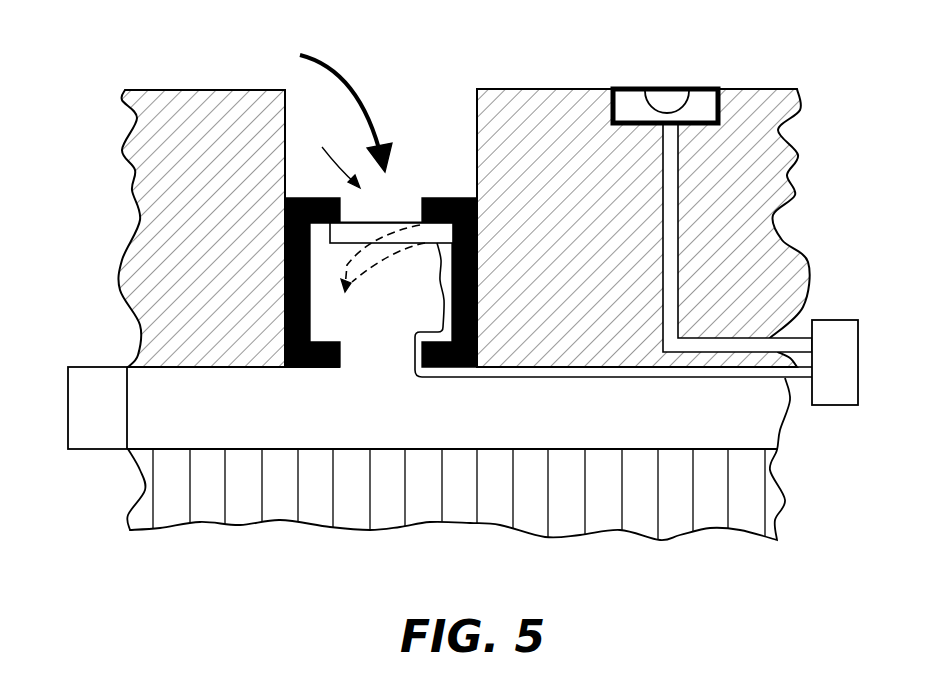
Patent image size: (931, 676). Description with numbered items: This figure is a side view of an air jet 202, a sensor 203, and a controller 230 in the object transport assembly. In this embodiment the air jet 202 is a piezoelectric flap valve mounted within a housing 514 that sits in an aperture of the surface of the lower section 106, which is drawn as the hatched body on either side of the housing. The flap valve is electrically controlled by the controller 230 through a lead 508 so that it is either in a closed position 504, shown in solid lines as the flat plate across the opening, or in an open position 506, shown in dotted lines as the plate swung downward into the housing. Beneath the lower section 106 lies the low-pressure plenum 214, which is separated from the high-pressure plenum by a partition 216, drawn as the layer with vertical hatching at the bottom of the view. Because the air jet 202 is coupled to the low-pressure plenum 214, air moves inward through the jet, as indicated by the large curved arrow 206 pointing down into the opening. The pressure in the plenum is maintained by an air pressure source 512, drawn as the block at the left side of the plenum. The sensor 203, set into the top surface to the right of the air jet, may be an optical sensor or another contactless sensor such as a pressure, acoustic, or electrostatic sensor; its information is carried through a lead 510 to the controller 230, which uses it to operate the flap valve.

The lower section 106 is at (153, 92).
The air jet 202 is at (332, 155).
The sensor 203 is at (668, 92).
The arrow 206 is at (298, 56).
The low-pressure plenum 214 is at (750, 432).
The partition 216 is at (770, 512).
The controller 230 is at (845, 387).
The closed position 504 is at (388, 222).
The open position 506 is at (378, 260).
The lead 508 is at (556, 378).
The lead 510 is at (797, 355).
The air pressure source 512 is at (95, 383).
The housing 514 is at (342, 353).